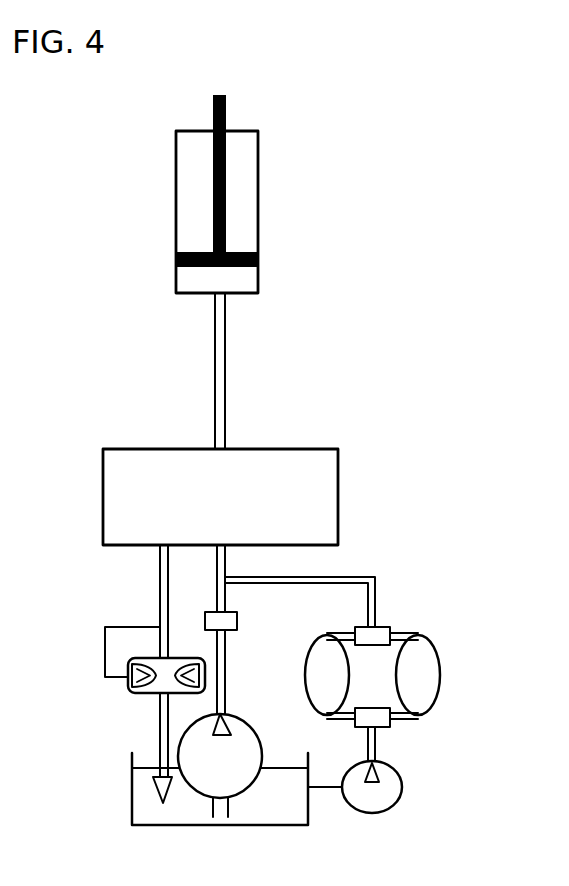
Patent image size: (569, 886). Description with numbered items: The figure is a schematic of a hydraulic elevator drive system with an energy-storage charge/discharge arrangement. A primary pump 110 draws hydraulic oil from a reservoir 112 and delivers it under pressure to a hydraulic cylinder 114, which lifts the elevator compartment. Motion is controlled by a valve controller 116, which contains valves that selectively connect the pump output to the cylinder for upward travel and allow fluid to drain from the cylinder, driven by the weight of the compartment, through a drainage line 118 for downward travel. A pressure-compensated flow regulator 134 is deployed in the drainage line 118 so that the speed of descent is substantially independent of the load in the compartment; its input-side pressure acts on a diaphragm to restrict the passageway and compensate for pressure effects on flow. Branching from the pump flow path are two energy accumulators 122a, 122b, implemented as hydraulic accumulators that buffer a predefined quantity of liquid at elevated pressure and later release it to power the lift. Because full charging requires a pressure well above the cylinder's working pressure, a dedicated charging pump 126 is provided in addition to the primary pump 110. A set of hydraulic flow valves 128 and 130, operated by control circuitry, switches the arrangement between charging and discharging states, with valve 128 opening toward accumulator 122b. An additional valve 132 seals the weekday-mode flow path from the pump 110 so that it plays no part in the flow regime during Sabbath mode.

The pump 110 is at (248, 722).
The reservoir 112 is at (132, 783).
The hydraulic cylinder 114 is at (176, 232).
The valve controller 116 is at (103, 497).
The drainage line 118 is at (155, 738).
The energy accumulator 122a is at (313, 667).
The energy accumulator 122b is at (420, 675).
The charging pump 126 is at (403, 790).
The hydraulic flow valve 128 is at (375, 720).
The hydraulic flow valve 130 is at (375, 635).
The valve 132 is at (202, 622).
The pressure-compensated flow regulator 134 is at (128, 668).